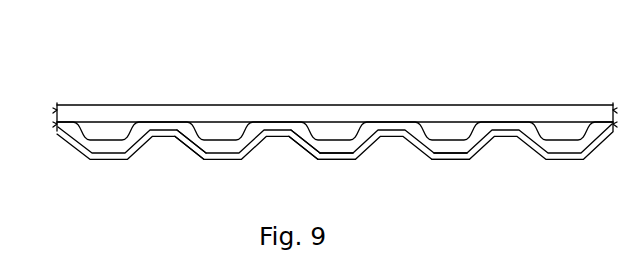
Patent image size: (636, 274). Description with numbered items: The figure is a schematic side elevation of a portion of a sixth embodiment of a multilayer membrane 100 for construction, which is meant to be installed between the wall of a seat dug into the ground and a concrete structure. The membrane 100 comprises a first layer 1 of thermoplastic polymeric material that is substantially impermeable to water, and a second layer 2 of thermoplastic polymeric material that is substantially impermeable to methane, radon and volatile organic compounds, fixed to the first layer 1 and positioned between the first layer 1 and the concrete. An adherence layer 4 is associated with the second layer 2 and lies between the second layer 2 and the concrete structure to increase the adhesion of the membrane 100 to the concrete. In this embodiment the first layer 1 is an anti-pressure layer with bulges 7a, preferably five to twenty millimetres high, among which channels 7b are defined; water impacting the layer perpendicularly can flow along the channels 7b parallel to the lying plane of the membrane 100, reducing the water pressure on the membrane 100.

The multilayer membrane 100 is at (324, 121).
The first layer 1 is at (113, 160).
The second layer 2 is at (120, 144).
The adherence layer 4 is at (255, 121).
The bulges 7a is at (343, 161).
The channels 7b is at (282, 148).